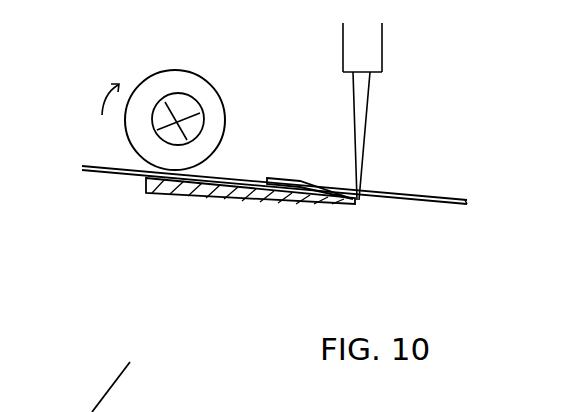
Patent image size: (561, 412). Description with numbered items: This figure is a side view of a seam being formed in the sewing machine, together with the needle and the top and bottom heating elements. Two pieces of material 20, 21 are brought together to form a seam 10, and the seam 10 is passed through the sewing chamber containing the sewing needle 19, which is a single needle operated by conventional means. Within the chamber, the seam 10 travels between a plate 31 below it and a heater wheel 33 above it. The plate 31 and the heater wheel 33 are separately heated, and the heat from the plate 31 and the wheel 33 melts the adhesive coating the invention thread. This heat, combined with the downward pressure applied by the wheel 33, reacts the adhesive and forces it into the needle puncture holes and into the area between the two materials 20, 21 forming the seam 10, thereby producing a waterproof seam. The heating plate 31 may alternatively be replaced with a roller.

The heater wheel 33 is at (178, 70).
The sewing needle 19 is at (363, 122).
The material 20 is at (400, 198).
The material 21 is at (412, 203).
The plate 31 is at (228, 200).
The seam 10 is at (267, 178).